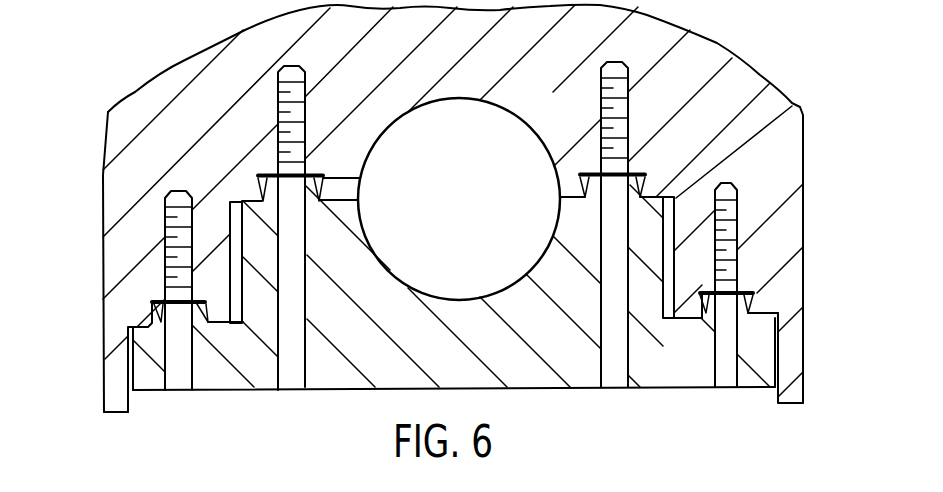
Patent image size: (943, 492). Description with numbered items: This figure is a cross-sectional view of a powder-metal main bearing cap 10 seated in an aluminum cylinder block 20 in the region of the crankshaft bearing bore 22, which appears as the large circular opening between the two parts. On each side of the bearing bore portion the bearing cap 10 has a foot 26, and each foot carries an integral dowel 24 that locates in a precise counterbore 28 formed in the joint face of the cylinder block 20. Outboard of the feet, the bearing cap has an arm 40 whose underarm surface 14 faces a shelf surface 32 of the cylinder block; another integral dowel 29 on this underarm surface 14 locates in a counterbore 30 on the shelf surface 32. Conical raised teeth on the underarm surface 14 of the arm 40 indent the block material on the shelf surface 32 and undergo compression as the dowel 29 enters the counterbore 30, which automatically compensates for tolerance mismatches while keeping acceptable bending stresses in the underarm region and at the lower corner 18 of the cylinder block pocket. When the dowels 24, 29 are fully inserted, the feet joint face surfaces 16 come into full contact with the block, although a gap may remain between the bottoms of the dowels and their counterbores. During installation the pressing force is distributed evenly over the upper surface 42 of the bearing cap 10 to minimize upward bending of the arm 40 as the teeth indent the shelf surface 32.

The bearing cap 10 is at (578, 398).
The underarm surface 14 is at (202, 308).
The feet joint face surfaces 16 is at (256, 200).
The lower corner 18 is at (222, 203).
The aluminum cylinder block 20 is at (96, 188).
The crankshaft bearing bore 22 is at (515, 131).
The integral dowel 24 is at (310, 187).
The foot 26 is at (340, 237).
The counterbore 28 is at (342, 178).
The integral dowel 29 is at (152, 312).
The counterbore 30 is at (150, 301).
The shelf surface 32 is at (132, 335).
The MBC arm 40 is at (156, 378).
The surface 42 is at (255, 388).